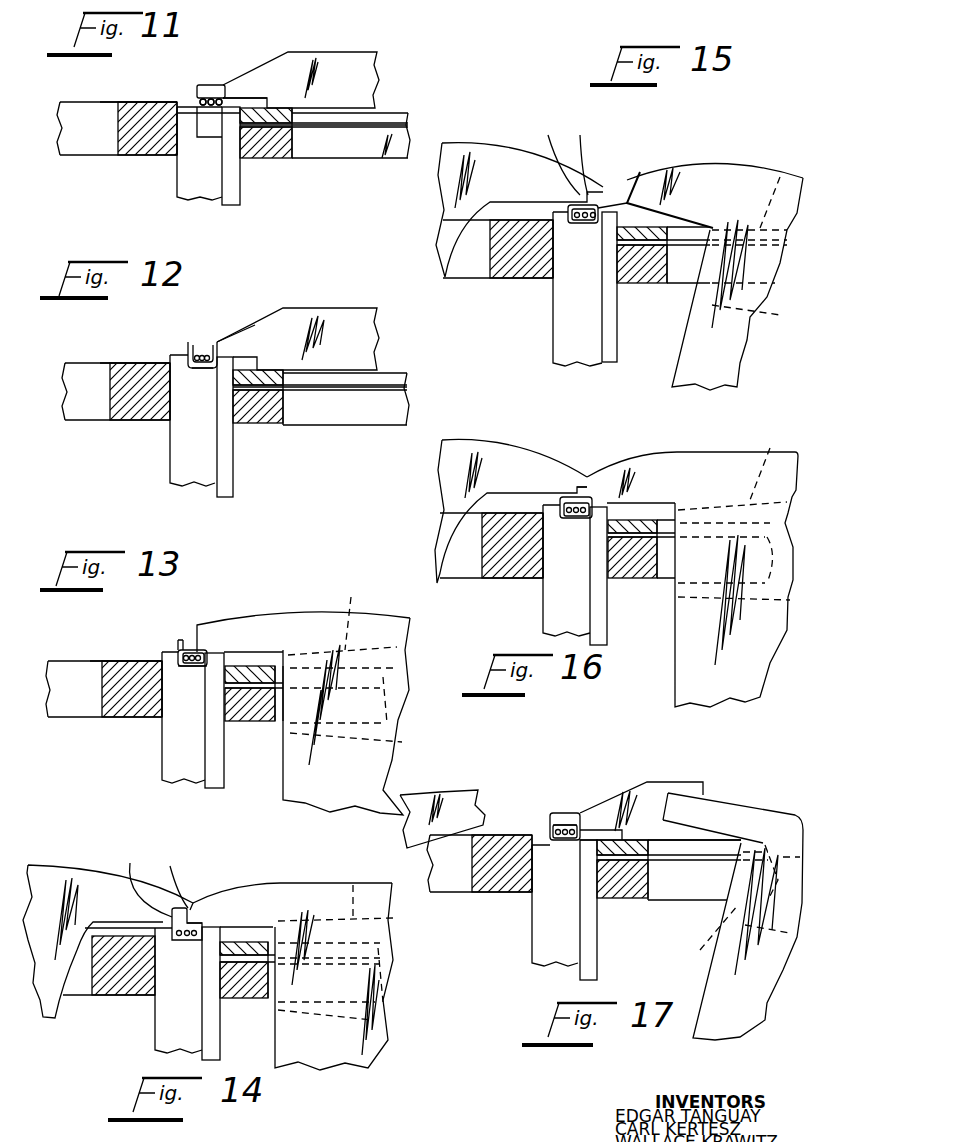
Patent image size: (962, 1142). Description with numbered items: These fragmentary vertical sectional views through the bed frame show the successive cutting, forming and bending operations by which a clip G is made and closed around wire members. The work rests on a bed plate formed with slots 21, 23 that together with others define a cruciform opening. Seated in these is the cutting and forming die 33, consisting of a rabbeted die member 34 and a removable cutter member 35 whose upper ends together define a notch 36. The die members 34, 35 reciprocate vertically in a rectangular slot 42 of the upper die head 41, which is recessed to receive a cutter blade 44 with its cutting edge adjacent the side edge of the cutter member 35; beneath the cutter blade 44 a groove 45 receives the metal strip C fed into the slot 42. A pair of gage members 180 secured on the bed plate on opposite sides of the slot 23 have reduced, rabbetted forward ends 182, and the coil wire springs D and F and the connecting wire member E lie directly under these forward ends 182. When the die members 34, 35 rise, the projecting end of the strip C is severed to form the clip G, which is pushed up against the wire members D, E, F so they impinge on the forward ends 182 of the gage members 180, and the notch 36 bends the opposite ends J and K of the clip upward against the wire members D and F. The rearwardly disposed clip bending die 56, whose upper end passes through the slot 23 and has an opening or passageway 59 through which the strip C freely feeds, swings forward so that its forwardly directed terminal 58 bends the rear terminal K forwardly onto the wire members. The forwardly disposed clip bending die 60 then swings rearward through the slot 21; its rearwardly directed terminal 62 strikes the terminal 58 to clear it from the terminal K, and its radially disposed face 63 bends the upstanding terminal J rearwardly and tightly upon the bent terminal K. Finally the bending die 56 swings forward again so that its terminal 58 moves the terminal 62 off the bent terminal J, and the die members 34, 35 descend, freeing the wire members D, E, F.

In FIG. 11, the slot 21 is at (97, 153).
In FIG. 12, the slot 21 is at (90, 408).
In FIG. 13, the slot 21 is at (74, 712).
In FIG. 14, the slot 21 is at (85, 987).
In FIG. 15, the slot 21 is at (470, 268).
In FIG. 16, the slot 21 is at (463, 565).
In FIG. 11, the slot 23 is at (358, 158).
In FIG. 12, the slot 23 is at (347, 415).
In FIG. 15, the slot 23 is at (680, 275).
In FIG. 16, the slot 23 is at (667, 580).
In FIG. 17, the slot 23 is at (683, 885).
In FIG. 11, the cutting and forming die 33 is at (129, 93).
In FIG. 12, the cutting and forming die 33 is at (120, 355).
In FIG. 13, the cutting and forming die 33 is at (109, 653).
In FIG. 11, the rabbeted die member 34 is at (180, 176).
In FIG. 12, the rabbeted die member 34 is at (178, 463).
In FIG. 13, the rabbeted die member 34 is at (186, 770).
In FIG. 14, the rabbeted die member 34 is at (167, 1017).
In FIG. 15, the rabbeted die member 34 is at (555, 338).
In FIG. 16, the rabbeted die member 34 is at (545, 624).
In FIG. 17, the rabbeted die member 34 is at (540, 935).
In FIG. 11, the removable cutter member 35 is at (236, 178).
In FIG. 12, the removable cutter member 35 is at (228, 473).
In FIG. 13, the removable cutter member 35 is at (218, 768).
In FIG. 14, the removable cutter member 35 is at (210, 1020).
In FIG. 15, the removable cutter member 35 is at (612, 340).
In FIG. 16, the removable cutter member 35 is at (600, 636).
In FIG. 17, the removable cutter member 35 is at (590, 920).
In FIG. 11, the notch 36 is at (205, 132).
In FIG. 11, the upper die head 41 is at (143, 152).
In FIG. 12, the upper die head 41 is at (138, 408).
In FIG. 13, the upper die head 41 is at (130, 712).
In FIG. 15, the upper die head 41 is at (505, 268).
In FIG. 16, the upper die head 41 is at (497, 565).
In FIG. 11, the rectangular slot 42 is at (173, 128).
In FIG. 12, the rectangular slot 42 is at (168, 383).
In FIG. 13, the rectangular slot 42 is at (155, 677).
In FIG. 15, the rectangular slot 42 is at (545, 265).
In FIG. 16, the rectangular slot 42 is at (540, 565).
In FIG. 17, the rectangular slot 42 is at (512, 888).
In FIG. 11, the cutter blade 44 is at (255, 112).
In FIG. 13, the cutter blade 44 is at (240, 666).
In FIG. 14, the cutter blade 44 is at (238, 940).
In FIG. 15, the cutter blade 44 is at (650, 230).
In FIG. 17, the cutter blade 44 is at (612, 840).
In FIG. 11, the groove 45 is at (268, 125).
In FIG. 13, the groove 45 is at (262, 686).
In FIG. 14, the groove 45 is at (258, 958).
In FIG. 15, the groove 45 is at (690, 243).
In FIG. 16, the groove 45 is at (632, 532).
In FIG. 17, the groove 45 is at (640, 862).
In FIG. 13, the rearwardly disposed clip bending die 56 is at (385, 741).
In FIG. 14, the rearwardly disposed clip bending die 56 is at (380, 920).
In FIG. 15, the rearwardly disposed clip bending die 56 is at (750, 310).
In FIG. 16, the rearwardly disposed clip bending die 56 is at (777, 623).
In FIG. 17, the rearwardly disposed clip bending die 56 is at (745, 808).
In FIG. 13, the forwardly directed terminal 58 is at (198, 640).
In FIG. 14, the forwardly directed terminal 58 is at (207, 900).
In FIG. 15, the forwardly directed terminal 58 is at (637, 178).
In FIG. 13, the opening or passageway 59 is at (367, 615).
In FIG. 14, the opening or passageway 59 is at (366, 887).
In FIG. 15, the opening or passageway 59 is at (788, 178).
In FIG. 16, the opening or passageway 59 is at (768, 462).
In FIG. 17, the opening or passageway 59 is at (709, 934).
In FIG. 14, the forwardly disposed clip bending die 60 is at (48, 872).
In FIG. 15, the forwardly disposed clip bending die 60 is at (495, 150).
In FIG. 16, the forwardly disposed clip bending die 60 is at (505, 450).
In FIG. 17, the forwardly disposed clip bending die 60 is at (470, 800).
In FIG. 14, the rearwardly directed terminal 62 is at (176, 876).
In FIG. 15, the rearwardly directed terminal 62 is at (579, 155).
In FIG. 14, the radially disposed face 63 is at (145, 877).
In FIG. 15, the radially disposed face 63 is at (559, 155).
In FIG. 11, the gage members 180 is at (337, 58).
In FIG. 12, the gage members 180 is at (303, 316).
In FIG. 17, the gage members 180 is at (645, 786).
In FIG. 11, the forward ends of the gage members 182 is at (198, 90).
In FIG. 17, the forward ends of the gage members 182 is at (566, 813).
In FIG. 11, the strip of metal C is at (365, 127).
In FIG. 12, the strip of metal C is at (362, 387).
In FIG. 13, the strip of metal C is at (400, 672).
In FIG. 14, the strip of metal C is at (390, 976).
In FIG. 15, the strip of metal C is at (752, 233).
In FIG. 16, the strip of metal C is at (665, 527).
In FIG. 17, the strip of metal C is at (695, 860).
In FIG. 11, the coil wire spring D is at (204, 99).
In FIG. 12, the coil wire spring D is at (198, 352).
In FIG. 13, the coil wire spring D is at (185, 668).
In FIG. 14, the coil wire spring D is at (178, 942).
In FIG. 15, the coil wire spring D is at (577, 222).
In FIG. 16, the coil wire spring D is at (567, 520).
In FIG. 17, the coil wire spring D is at (554, 840).
In FIG. 11, the connecting wire member E is at (211, 99).
In FIG. 12, the connecting wire member E is at (203, 352).
In FIG. 13, the connecting wire member E is at (192, 668).
In FIG. 14, the connecting wire member E is at (186, 942).
In FIG. 15, the connecting wire member E is at (584, 222).
In FIG. 16, the connecting wire member E is at (575, 520).
In FIG. 17, the connecting wire member E is at (561, 840).
In FIG. 11, the coil wire spring F is at (219, 98).
In FIG. 12, the coil wire spring F is at (208, 352).
In FIG. 13, the coil wire spring F is at (200, 668).
In FIG. 14, the coil wire spring F is at (194, 942).
In FIG. 15, the coil wire spring F is at (592, 222).
In FIG. 16, the coil wire spring F is at (582, 520).
In FIG. 17, the coil wire spring F is at (568, 840).
In FIG. 11, the clip G is at (226, 90).
In FIG. 12, the clip G is at (200, 370).
In FIG. 13, the clip G is at (197, 670).
In FIG. 12, the front terminal of the clip J is at (190, 347).
In FIG. 13, the front terminal of the clip J is at (180, 650).
In FIG. 14, the front terminal of the clip J is at (172, 915).
In FIG. 15, the front terminal of the clip J is at (598, 206).
In FIG. 16, the front terminal of the clip J is at (565, 497).
In FIG. 17, the front terminal of the clip J is at (553, 813).
In FIG. 12, the rear terminal of the clip K is at (218, 348).
In FIG. 13, the rear terminal of the clip K is at (194, 652).
In FIG. 14, the rear terminal of the clip K is at (198, 920).
In FIG. 15, the rear terminal of the clip K is at (600, 212).
In FIG. 16, the rear terminal of the clip K is at (585, 497).
In FIG. 17, the rear terminal of the clip K is at (570, 813).